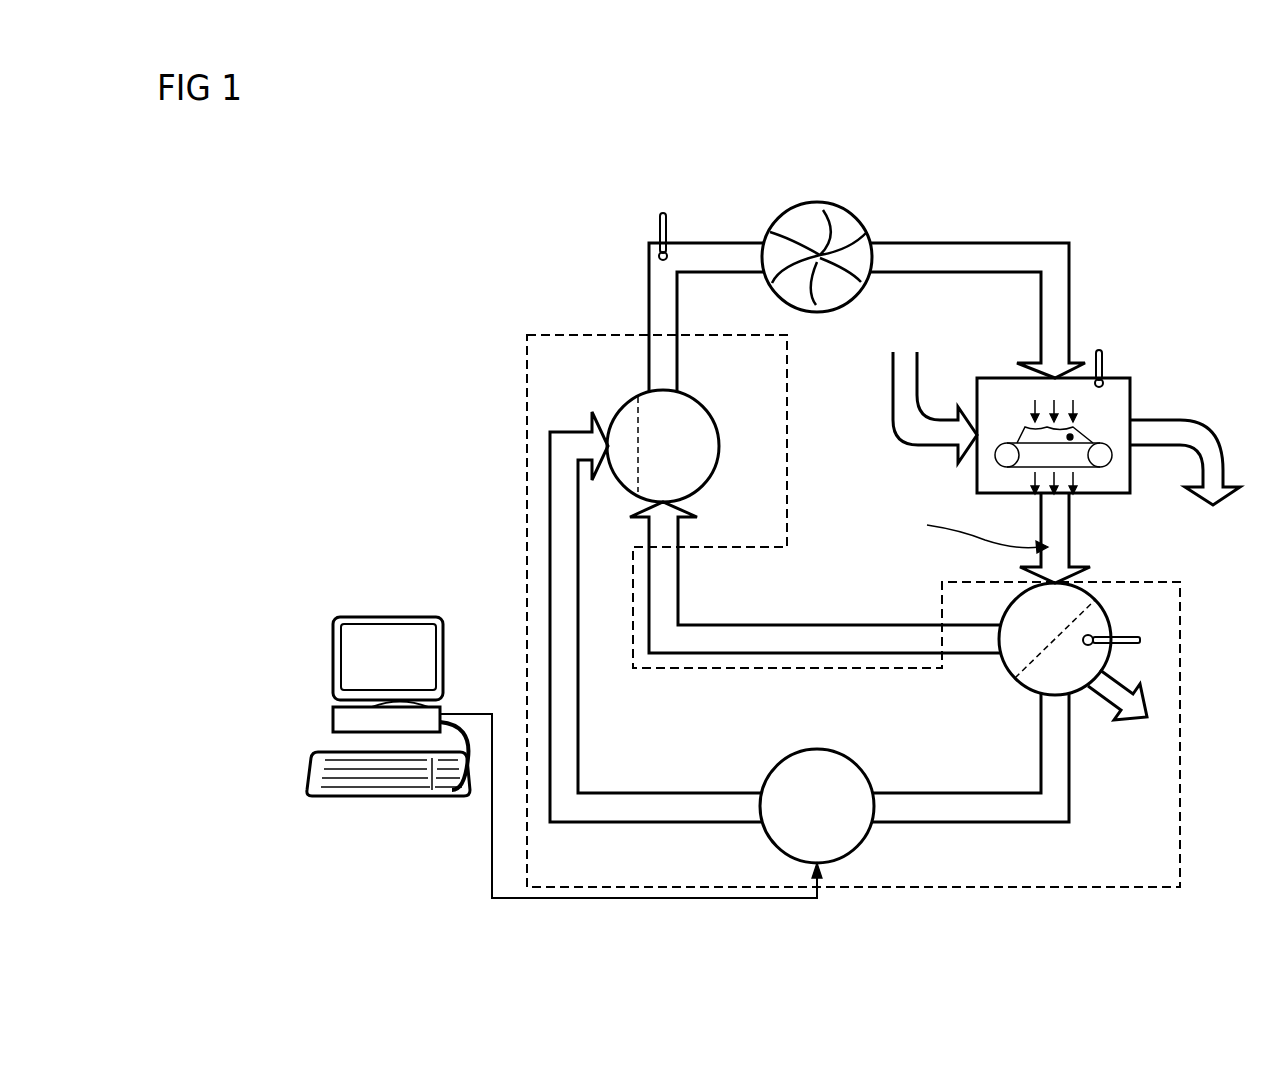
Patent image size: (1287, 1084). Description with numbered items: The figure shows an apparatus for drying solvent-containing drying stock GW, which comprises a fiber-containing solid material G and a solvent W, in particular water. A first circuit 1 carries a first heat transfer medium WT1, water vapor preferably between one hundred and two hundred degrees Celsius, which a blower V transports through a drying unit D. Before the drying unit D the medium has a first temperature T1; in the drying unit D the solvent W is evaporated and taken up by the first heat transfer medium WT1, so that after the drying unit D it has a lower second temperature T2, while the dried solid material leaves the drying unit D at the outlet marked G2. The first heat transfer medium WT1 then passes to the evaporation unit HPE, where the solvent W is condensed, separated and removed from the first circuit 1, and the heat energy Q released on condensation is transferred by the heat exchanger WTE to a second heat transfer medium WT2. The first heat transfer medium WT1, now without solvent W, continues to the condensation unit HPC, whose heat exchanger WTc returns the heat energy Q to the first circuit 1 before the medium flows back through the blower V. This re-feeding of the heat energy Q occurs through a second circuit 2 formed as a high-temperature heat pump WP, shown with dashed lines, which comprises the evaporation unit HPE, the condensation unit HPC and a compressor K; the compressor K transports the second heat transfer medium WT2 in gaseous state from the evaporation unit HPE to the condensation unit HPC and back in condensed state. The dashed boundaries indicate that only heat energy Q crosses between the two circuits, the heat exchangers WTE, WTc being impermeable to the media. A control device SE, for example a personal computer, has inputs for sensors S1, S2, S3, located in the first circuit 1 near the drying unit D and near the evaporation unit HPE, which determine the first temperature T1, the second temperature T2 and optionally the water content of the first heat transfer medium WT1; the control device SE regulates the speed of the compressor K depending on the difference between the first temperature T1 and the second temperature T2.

The first circuit 1 is at (1096, 248).
The second circuit 2 is at (487, 561).
The heat pump WP is at (525, 396).
The first heat transfer medium WT1 is at (1053, 310).
The second heat transfer medium WT2 is at (942, 810).
The first temperature T1 is at (993, 264).
The second temperature T2 is at (1062, 530).
The blower V is at (808, 203).
The sensor S1 is at (663, 213).
The sensor S2 is at (1099, 350).
The sensor S3 is at (1140, 640).
The condensation unit HPC is at (691, 446).
The evaporation unit HPE is at (1079, 639).
The heat exchanger WTc is at (634, 421).
The heat exchanger WTE is at (1055, 633).
The drying unit D is at (1117, 373).
The solid material G is at (1070, 437).
The dried good outlet G2 is at (1185, 483).
The drying stock GW is at (930, 391).
The solvent W is at (1130, 714).
The compressor K is at (817, 806).
The heat energy Q is at (607, 647).
The control device SE is at (388, 731).